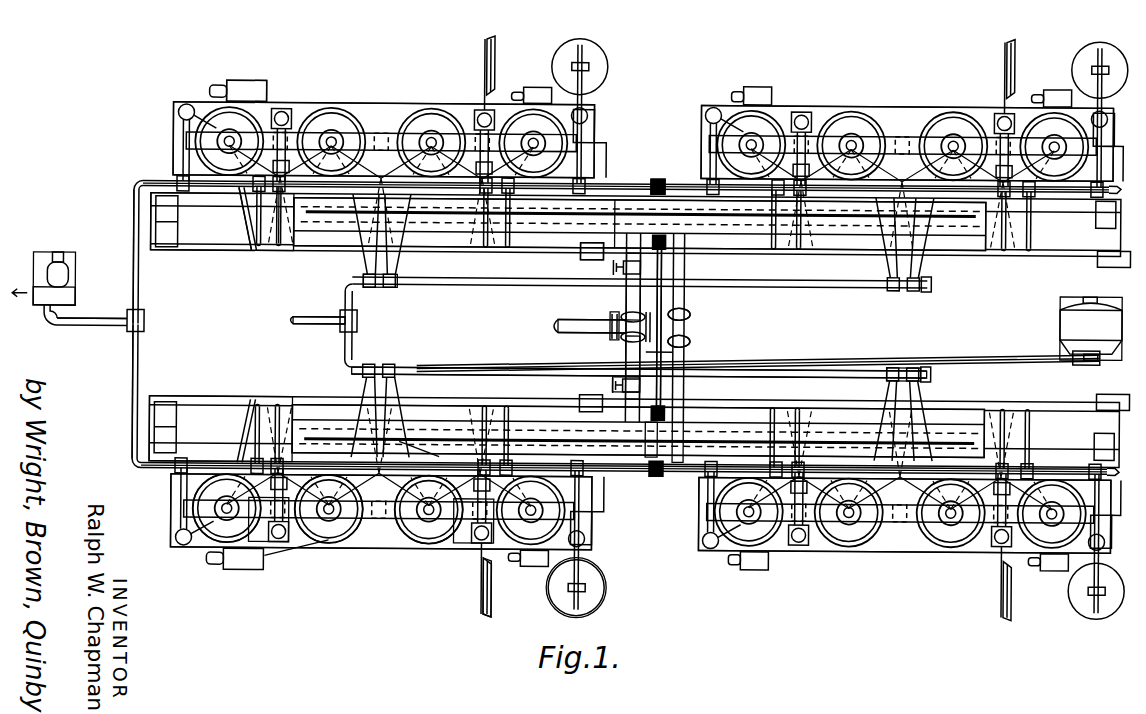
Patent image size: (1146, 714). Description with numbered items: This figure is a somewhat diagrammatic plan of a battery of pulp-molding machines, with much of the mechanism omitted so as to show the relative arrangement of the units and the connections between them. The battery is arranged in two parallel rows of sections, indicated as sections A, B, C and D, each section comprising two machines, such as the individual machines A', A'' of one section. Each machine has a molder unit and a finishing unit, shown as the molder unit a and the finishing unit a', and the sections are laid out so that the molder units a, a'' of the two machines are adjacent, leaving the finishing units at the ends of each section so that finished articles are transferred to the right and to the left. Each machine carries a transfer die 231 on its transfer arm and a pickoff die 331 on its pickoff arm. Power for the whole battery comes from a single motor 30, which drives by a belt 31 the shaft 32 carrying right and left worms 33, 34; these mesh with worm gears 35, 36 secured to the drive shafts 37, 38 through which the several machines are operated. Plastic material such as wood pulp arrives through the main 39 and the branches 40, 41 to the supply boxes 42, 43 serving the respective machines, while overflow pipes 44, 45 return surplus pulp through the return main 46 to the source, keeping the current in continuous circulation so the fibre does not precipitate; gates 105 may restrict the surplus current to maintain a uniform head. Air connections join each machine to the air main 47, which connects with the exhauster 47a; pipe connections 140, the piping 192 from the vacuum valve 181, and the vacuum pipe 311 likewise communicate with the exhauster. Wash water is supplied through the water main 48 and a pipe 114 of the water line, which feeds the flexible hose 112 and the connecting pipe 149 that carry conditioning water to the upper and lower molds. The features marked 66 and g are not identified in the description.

The vacuum valve 181 is at (252, 95).
The section C is at (380, 115).
The section D is at (900, 118).
The supply box 43 is at (616, 218).
The worm 34 is at (656, 194).
The worm gear 36 is at (660, 248).
The pipe connections 140 is at (222, 190).
The drive shaft 38 is at (234, 217).
The piping 192 is at (247, 220).
The vacuum pipe 311 is at (280, 242).
The connecting pipe 149 is at (366, 239).
The flexible hose 112 is at (366, 282).
The water main 48 is at (318, 320).
The air main 47 is at (110, 321).
The exhauster 47a is at (50, 307).
The main 39 is at (571, 327).
The overflow pipe 45 is at (632, 292).
The shaft 32 is at (662, 300).
The branch 41 is at (690, 309).
The return main 46 is at (597, 327).
The overflow pipe 44 is at (633, 367).
The branch 40 is at (690, 346).
The gate 105 is at (612, 383).
The pipe 114 is at (426, 373).
The cylinder 66 is at (298, 420).
The drive shaft 37 is at (207, 440).
The belt 31 is at (949, 360).
The motor 30 is at (1061, 319).
The worm 33 is at (646, 422).
The supply box 42 is at (640, 457).
The worm gear 35 is at (672, 462).
The finishing unit a' is at (219, 535).
The individual machine A' is at (264, 552).
The eccentric rod g is at (281, 564).
The molder unit a is at (328, 534).
The section A is at (381, 535).
The molder unit a'' is at (428, 533).
The individual machine A'' is at (469, 554).
The transfer die 231 is at (494, 598).
The pickoff die 331 is at (609, 593).
The section B is at (905, 541).